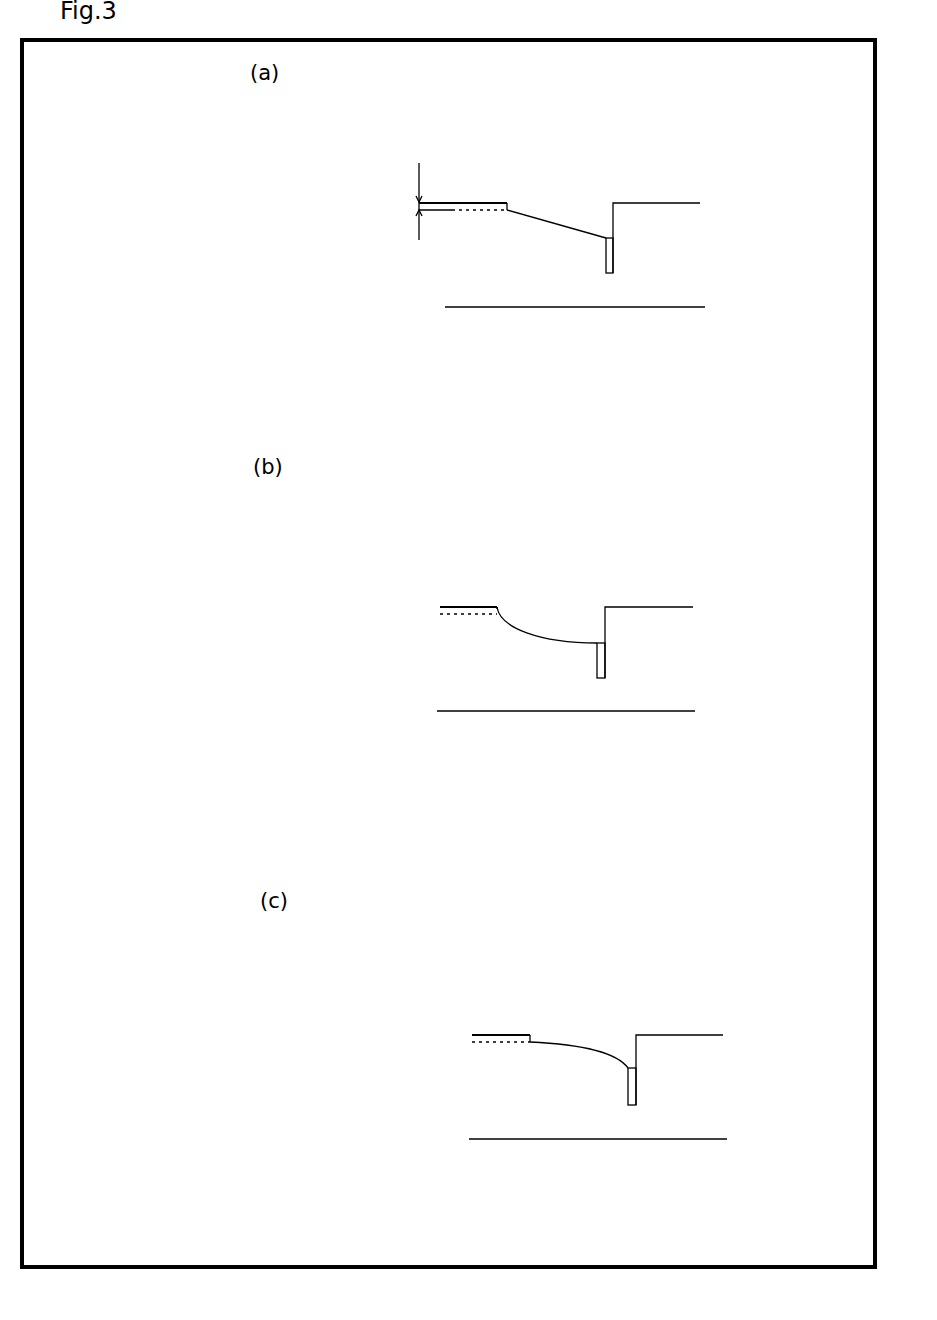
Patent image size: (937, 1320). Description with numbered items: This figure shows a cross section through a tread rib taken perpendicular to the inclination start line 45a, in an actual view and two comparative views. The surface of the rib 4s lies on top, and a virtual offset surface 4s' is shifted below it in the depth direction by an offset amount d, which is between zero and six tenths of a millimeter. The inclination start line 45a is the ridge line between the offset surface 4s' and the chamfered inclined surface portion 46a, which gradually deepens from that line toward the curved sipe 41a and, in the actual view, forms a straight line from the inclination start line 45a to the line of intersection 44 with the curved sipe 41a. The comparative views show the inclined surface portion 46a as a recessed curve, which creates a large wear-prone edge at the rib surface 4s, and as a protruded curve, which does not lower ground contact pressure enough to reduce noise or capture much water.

The surface of the rib 4s is at (471, 558).
The virtual offset surface 4s' is at (450, 660).
The inclination start line 45a is at (507, 207).
The inclined surface portion 46a is at (565, 225).
The line of intersection 44 is at (612, 236).
The curved sipe 41a is at (610, 273).
The offset amount d is at (417, 203).